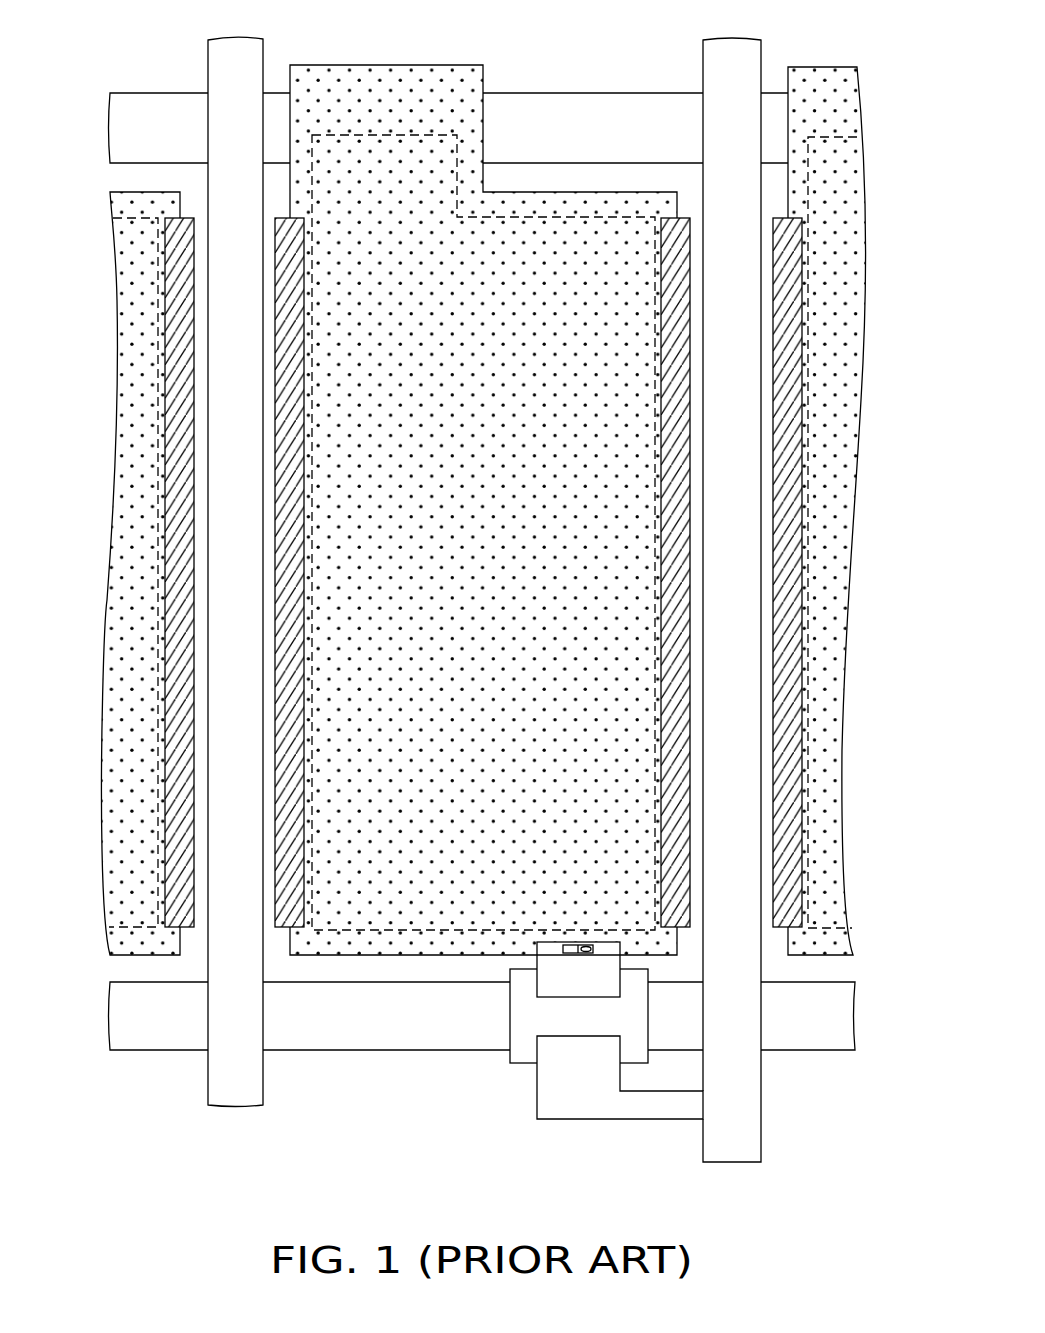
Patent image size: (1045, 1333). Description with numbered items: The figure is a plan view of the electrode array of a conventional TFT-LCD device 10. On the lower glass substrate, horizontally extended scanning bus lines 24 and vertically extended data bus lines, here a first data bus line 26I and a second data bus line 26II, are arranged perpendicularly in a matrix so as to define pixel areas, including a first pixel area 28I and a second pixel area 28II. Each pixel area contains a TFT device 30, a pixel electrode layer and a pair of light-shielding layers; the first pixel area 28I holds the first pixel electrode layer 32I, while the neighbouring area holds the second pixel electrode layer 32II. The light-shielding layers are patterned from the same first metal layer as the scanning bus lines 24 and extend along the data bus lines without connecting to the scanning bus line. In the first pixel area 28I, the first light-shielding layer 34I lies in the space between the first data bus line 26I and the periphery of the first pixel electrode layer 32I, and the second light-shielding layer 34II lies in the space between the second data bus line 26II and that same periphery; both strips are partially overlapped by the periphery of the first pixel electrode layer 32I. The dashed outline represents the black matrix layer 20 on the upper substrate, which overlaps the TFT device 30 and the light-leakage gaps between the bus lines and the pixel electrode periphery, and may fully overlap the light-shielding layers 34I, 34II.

The TFT-LCD device 10 is at (484, 615).
The black matrix layer 20 is at (384, 134).
The scanning bus line 24 is at (158, 102).
The first data bus line 26I is at (732, 1150).
The second data bus line 26II is at (235, 1108).
The first pixel area 28I is at (564, 183).
The second pixel area 28II is at (773, 183).
The TFT device 30 is at (527, 1074).
The first pixel electrode layer 32I is at (502, 545).
The second pixel electrode layer 32II is at (840, 76).
The first light-shielding layer 34I is at (185, 531).
The second light-shielding layer 34II is at (296, 530).